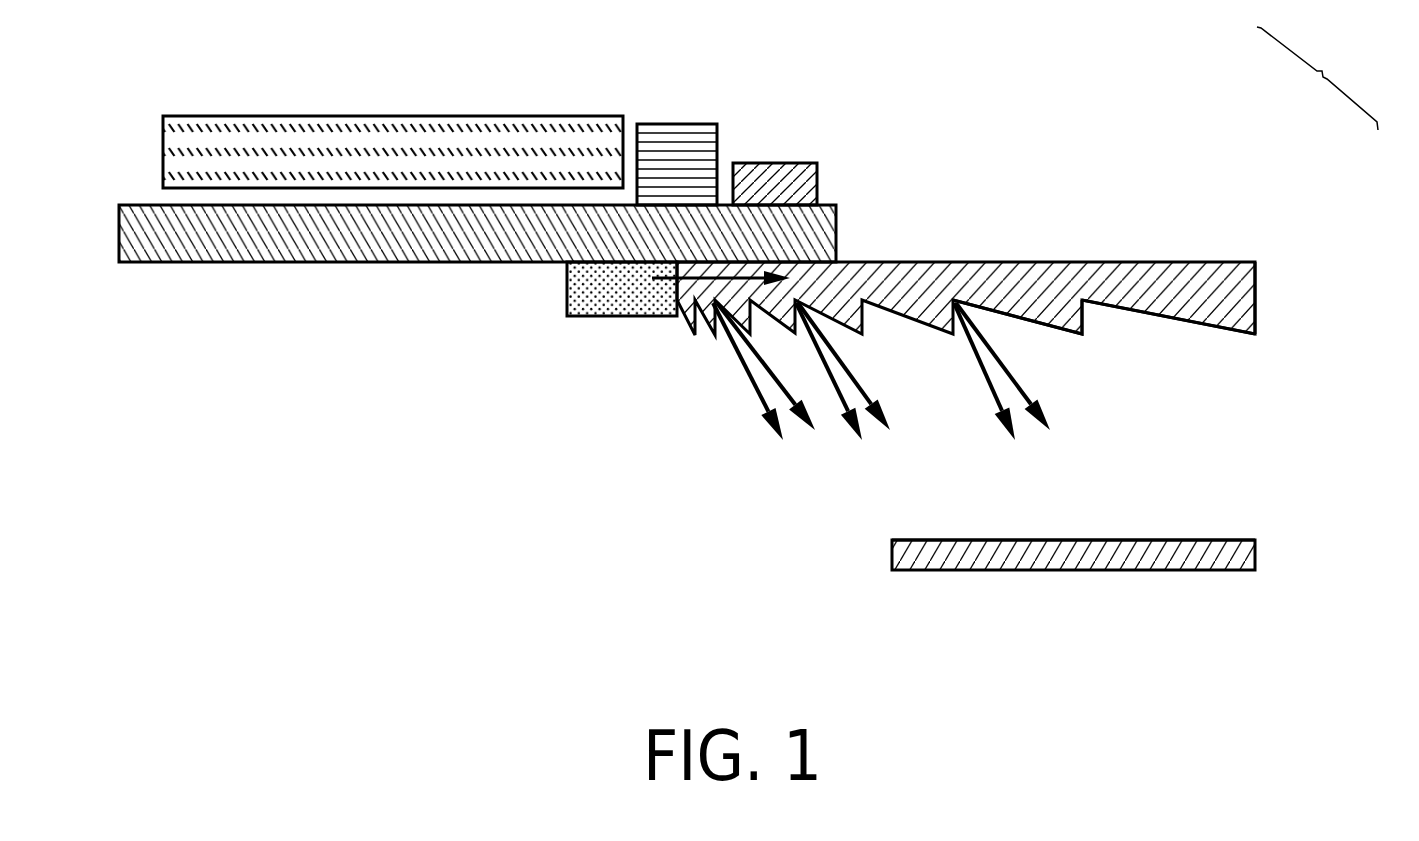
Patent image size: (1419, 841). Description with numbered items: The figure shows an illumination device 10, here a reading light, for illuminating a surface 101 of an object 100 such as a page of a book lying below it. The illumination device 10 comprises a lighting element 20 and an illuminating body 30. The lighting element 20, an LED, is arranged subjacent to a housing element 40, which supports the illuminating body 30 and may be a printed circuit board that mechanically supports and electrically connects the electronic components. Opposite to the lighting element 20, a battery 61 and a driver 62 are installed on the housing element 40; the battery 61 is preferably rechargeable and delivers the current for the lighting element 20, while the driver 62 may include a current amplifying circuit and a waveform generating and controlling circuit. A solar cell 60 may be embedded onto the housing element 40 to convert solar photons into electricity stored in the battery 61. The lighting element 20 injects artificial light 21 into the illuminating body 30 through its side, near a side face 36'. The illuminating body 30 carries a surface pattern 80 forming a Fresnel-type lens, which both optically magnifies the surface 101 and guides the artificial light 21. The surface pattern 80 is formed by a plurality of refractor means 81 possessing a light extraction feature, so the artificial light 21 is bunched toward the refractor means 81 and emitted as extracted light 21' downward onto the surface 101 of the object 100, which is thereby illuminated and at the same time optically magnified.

The illumination device 10 is at (1317, 78).
The lighting element 20 is at (597, 295).
The artificial light 21 is at (715, 337).
The light coupled out of light guide 21' is at (869, 391).
The illuminating body 30 is at (1056, 194).
The side face 36' is at (1320, 298).
The housing element 40 is at (228, 250).
The solar cell 60 is at (400, 137).
The battery 61 is at (672, 130).
The driver 62 is at (774, 160).
The surface pattern 80 is at (1211, 358).
The refractor means 81 is at (1050, 312).
The object 100 is at (955, 560).
The surface 101 is at (1232, 538).